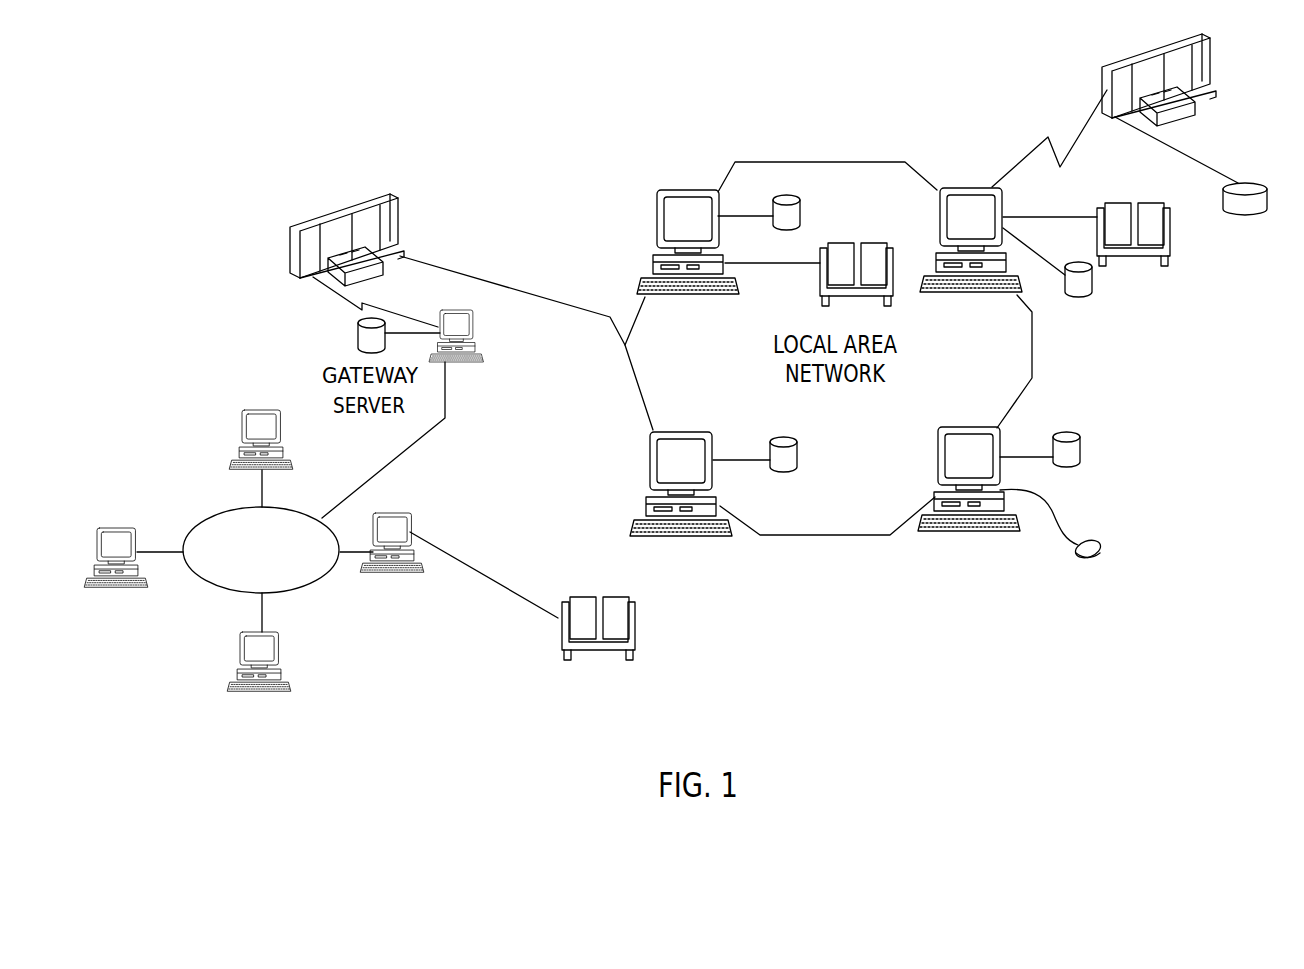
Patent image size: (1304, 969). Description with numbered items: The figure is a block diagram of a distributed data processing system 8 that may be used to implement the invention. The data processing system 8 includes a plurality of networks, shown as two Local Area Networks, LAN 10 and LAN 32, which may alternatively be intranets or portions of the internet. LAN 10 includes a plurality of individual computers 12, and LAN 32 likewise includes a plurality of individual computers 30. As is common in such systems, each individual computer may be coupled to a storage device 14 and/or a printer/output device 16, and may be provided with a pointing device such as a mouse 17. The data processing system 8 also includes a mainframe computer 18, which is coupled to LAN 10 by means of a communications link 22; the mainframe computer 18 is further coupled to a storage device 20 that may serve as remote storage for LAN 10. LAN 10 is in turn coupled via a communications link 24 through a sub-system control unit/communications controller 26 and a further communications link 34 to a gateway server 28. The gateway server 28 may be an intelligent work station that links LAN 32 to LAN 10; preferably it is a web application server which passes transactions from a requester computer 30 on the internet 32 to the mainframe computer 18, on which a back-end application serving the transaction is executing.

The data processing system 8 is at (788, 164).
The local area network 10 is at (808, 536).
The individual computer 12 is at (674, 190).
The storage device 14 is at (802, 213).
The printer/output device 16 is at (866, 244).
The mouse 17 is at (1100, 543).
The mainframe computer 18 is at (1166, 50).
The storage device 20 is at (1257, 183).
The communications link 22 is at (1083, 117).
The communications link 24 is at (515, 287).
The sub-system control unit/communications controller 26 is at (397, 197).
The gateway server 28 is at (448, 312).
The individual computer 30 is at (255, 412).
The local area network 32 is at (217, 588).
The communications link 34 is at (335, 297).